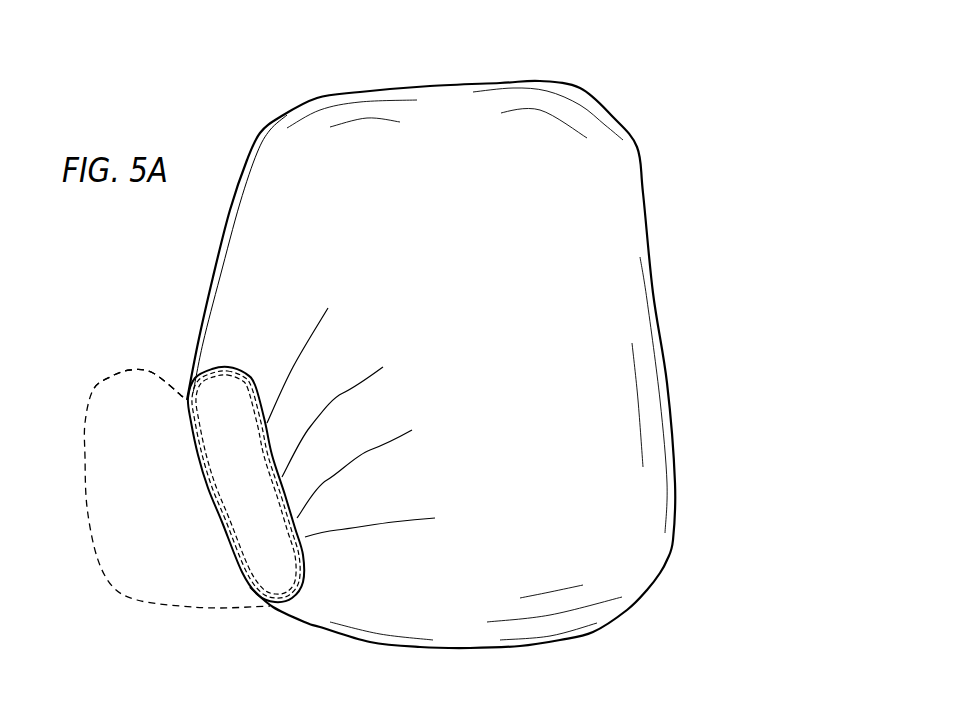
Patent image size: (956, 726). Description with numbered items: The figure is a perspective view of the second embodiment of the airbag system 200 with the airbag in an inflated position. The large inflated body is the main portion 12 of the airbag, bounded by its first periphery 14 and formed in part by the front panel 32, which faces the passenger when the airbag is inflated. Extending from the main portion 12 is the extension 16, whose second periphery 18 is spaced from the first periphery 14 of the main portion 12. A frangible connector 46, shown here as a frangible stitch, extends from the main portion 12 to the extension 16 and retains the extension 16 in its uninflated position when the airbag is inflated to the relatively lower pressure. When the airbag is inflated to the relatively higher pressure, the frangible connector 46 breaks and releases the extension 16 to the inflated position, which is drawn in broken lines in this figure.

The airbag system 200 is at (658, 67).
The main portion 12 is at (464, 223).
The first periphery 14 is at (318, 100).
The extension 16 is at (110, 462).
The second periphery 18 is at (120, 370).
The front panel 32 is at (637, 548).
The frangible connector 46 is at (297, 597).